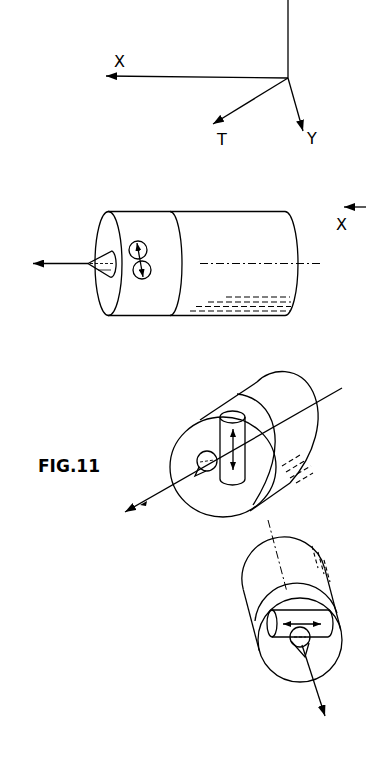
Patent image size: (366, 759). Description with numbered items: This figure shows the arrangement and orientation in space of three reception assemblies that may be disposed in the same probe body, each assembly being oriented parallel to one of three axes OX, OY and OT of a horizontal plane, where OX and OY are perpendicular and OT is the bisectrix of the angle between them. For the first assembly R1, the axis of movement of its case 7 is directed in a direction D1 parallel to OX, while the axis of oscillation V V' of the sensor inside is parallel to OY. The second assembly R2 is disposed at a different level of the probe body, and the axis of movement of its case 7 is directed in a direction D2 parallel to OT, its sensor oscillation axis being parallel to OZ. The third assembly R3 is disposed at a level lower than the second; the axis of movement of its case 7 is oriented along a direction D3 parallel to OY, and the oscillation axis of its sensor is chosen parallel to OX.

The case 7 is at (102, 312).
The first assembly R1 is at (243, 211).
The second assembly R2 is at (310, 378).
The third assembly R3 is at (237, 590).
The direction of movement of first assembly case D1 is at (60, 281).
The direction of movement of second assembly case D2 is at (233, 465).
The direction of movement of third assembly case D3 is at (324, 688).